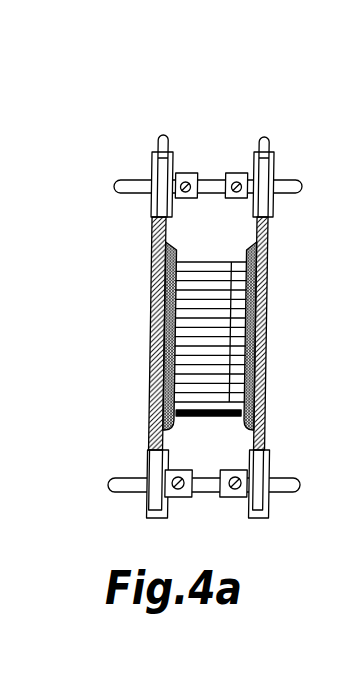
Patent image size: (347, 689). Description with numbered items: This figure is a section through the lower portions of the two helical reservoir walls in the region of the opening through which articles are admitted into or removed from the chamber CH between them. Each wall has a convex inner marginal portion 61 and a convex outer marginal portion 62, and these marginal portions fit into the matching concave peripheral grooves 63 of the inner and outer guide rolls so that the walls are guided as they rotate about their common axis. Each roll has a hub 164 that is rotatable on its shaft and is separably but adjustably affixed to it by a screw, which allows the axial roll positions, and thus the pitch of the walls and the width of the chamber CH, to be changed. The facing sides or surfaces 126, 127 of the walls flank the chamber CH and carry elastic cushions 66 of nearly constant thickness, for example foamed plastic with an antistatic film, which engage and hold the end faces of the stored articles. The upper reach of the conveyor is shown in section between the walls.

The peripheral groove 63 is at (160, 155).
The hub 164 is at (241, 172).
The elastic cushion 66 is at (248, 248).
The inner marginal portion 61 is at (153, 235).
The outer marginal portion 62 is at (153, 417).
The side surface 126 is at (163, 432).
The side surface 127 is at (248, 432).
The chamber CH is at (218, 249).